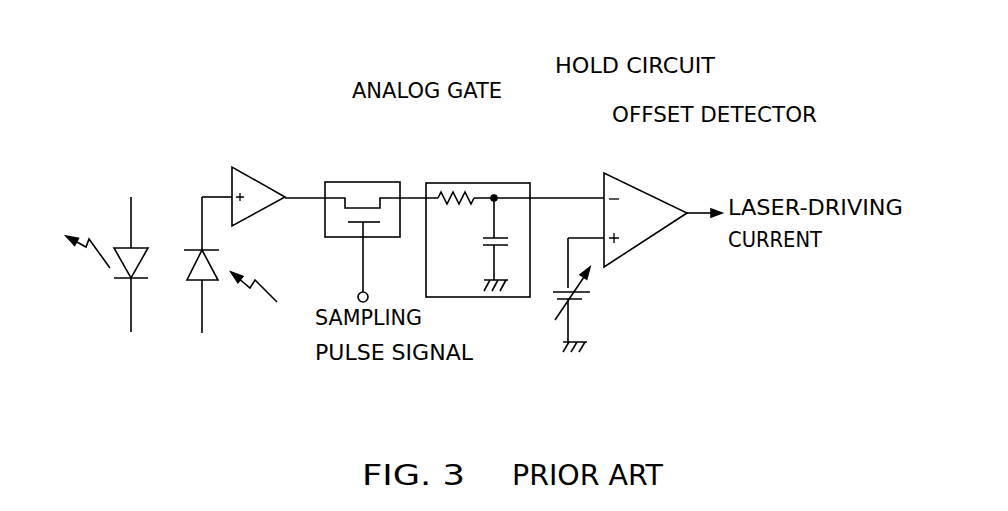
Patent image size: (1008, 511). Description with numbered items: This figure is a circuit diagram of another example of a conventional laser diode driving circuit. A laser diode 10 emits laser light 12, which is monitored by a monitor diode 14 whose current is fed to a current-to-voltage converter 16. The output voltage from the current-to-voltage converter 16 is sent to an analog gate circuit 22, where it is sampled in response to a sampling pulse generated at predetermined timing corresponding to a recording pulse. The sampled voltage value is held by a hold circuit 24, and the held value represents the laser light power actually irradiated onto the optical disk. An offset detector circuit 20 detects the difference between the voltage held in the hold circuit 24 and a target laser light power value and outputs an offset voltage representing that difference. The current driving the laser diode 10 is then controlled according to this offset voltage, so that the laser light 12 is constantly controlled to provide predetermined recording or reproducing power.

The laser diode 10 is at (120, 282).
The laser light 12 is at (93, 255).
The monitor diode 14 is at (192, 280).
The current-to-voltage converter 16 is at (258, 170).
The offset detector circuit 20 is at (630, 173).
The analog gate circuit 22 is at (345, 180).
The hold circuit 24 is at (495, 182).